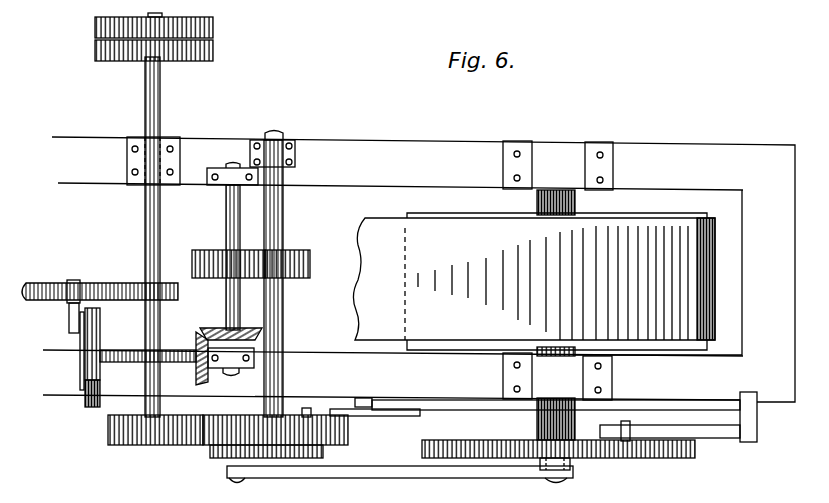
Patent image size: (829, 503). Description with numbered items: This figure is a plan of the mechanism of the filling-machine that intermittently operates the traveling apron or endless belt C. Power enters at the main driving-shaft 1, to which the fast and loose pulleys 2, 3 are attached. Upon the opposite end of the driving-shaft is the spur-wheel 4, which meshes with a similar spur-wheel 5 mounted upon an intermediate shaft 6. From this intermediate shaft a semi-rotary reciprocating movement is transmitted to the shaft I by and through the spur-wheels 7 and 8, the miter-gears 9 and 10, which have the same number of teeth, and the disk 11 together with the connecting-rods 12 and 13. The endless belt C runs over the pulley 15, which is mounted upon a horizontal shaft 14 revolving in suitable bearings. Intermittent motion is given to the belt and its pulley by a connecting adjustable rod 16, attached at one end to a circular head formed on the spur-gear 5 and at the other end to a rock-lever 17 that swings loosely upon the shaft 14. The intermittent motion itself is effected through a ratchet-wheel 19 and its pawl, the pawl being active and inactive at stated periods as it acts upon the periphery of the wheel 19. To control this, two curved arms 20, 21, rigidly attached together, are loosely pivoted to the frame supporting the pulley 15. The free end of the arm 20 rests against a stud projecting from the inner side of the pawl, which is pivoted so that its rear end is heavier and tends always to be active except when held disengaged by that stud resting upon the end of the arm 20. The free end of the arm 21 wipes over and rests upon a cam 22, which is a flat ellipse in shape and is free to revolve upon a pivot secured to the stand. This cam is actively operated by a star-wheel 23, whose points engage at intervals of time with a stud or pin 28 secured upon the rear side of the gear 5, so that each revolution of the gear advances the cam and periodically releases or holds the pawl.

The main driving-shaft 1 is at (143, 237).
The fast pulley 2 is at (145, 50).
The loose pulley 3 is at (163, 25).
The spur-wheel 4 is at (148, 441).
The spur-wheel 5 is at (247, 432).
The intermediate shaft 6 is at (280, 341).
The spur-wheel 7 is at (288, 258).
The spur-wheel 8 is at (213, 260).
The miter-gear 9 is at (214, 330).
The miter-gear 10 is at (205, 385).
The disk 11 is at (87, 400).
The connecting-rod 12 is at (82, 360).
The connecting-rod 13 is at (70, 318).
The horizontal shaft 14 is at (577, 202).
The pulley 15 is at (488, 222).
The connecting adjustable rod 16 is at (400, 480).
The rock-lever 17 is at (571, 465).
The ratchet-wheel 19 is at (558, 456).
The curved arm 20 is at (720, 434).
The curved arm 21 is at (488, 405).
The cam 22 is at (362, 404).
The star-wheel 23 is at (368, 416).
The stud 28 is at (307, 408).
The shaft I is at (100, 285).
The endless belt C is at (534, 279).